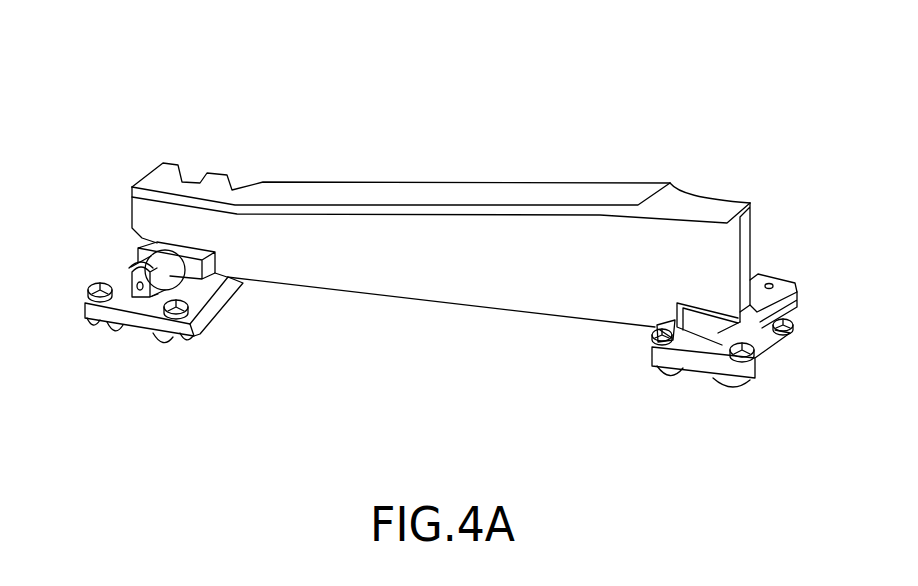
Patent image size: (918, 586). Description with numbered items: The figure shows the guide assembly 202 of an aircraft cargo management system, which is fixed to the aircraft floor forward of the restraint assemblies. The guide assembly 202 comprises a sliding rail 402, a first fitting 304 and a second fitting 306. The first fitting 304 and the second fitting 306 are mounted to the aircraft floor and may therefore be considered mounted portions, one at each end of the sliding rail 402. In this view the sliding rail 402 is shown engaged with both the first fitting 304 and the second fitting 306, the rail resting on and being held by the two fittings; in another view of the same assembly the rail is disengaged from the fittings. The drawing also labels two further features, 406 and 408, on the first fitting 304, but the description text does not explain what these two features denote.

The guide assembly 202 is at (205, 56).
The sliding rail 402 is at (537, 185).
The first fitting 304 is at (232, 313).
The second fitting 306 is at (797, 287).
The fasteners 406 is at (187, 307).
The pivot cylinder 408 is at (127, 265).